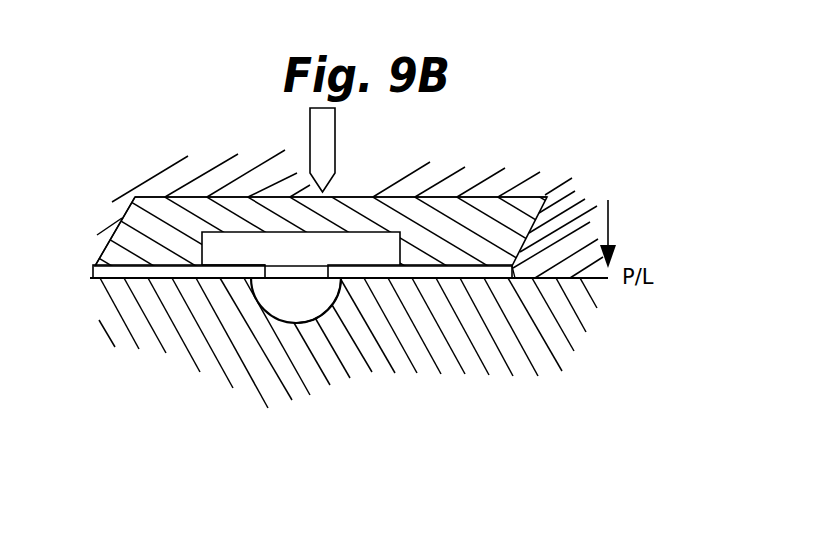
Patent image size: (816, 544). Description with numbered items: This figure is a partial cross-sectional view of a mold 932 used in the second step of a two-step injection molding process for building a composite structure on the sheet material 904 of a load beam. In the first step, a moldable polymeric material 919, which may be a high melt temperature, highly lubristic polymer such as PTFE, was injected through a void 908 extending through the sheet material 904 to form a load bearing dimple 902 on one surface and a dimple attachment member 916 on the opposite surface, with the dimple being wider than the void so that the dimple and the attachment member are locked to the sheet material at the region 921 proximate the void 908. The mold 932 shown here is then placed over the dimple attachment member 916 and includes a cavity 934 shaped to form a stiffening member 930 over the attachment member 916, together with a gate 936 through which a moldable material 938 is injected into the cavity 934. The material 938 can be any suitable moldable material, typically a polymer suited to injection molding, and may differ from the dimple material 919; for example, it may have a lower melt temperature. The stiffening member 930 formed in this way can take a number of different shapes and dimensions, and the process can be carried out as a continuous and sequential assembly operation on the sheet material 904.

The load bearing dimple 902 is at (341, 305).
The sheet material 904 is at (170, 272).
The void 908 is at (291, 285).
The dimple attachment member 916 is at (366, 250).
The moldable polymeric material 919 is at (232, 251).
The proximate region of the void 921 is at (328, 283).
The stiffening member 930 is at (450, 222).
The mold 932 is at (568, 125).
The cavity 934 is at (529, 196).
The gate 936 is at (333, 158).
The moldable material 938 is at (163, 222).